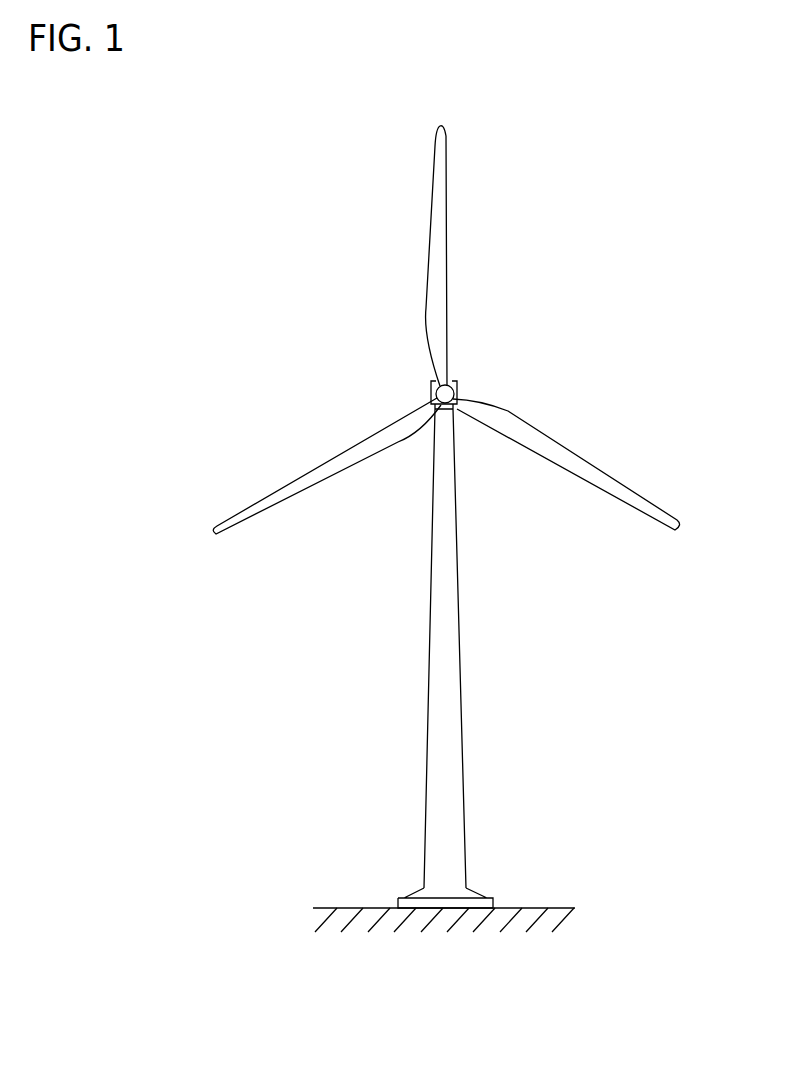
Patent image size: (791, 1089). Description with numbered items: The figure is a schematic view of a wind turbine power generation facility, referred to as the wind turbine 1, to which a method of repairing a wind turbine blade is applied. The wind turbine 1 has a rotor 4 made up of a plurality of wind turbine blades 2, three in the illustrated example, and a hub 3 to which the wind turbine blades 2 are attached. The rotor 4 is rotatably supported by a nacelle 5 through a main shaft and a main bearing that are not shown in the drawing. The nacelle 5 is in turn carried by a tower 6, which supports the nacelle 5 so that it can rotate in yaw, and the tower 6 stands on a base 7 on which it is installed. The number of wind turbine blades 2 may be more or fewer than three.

The wind turbine 1 is at (646, 170).
The wind turbine blade 2 is at (450, 180).
The hub 3 is at (431, 392).
The rotor 4 is at (599, 349).
The nacelle 5 is at (460, 383).
The tower 6 is at (445, 558).
The base 7 is at (470, 893).